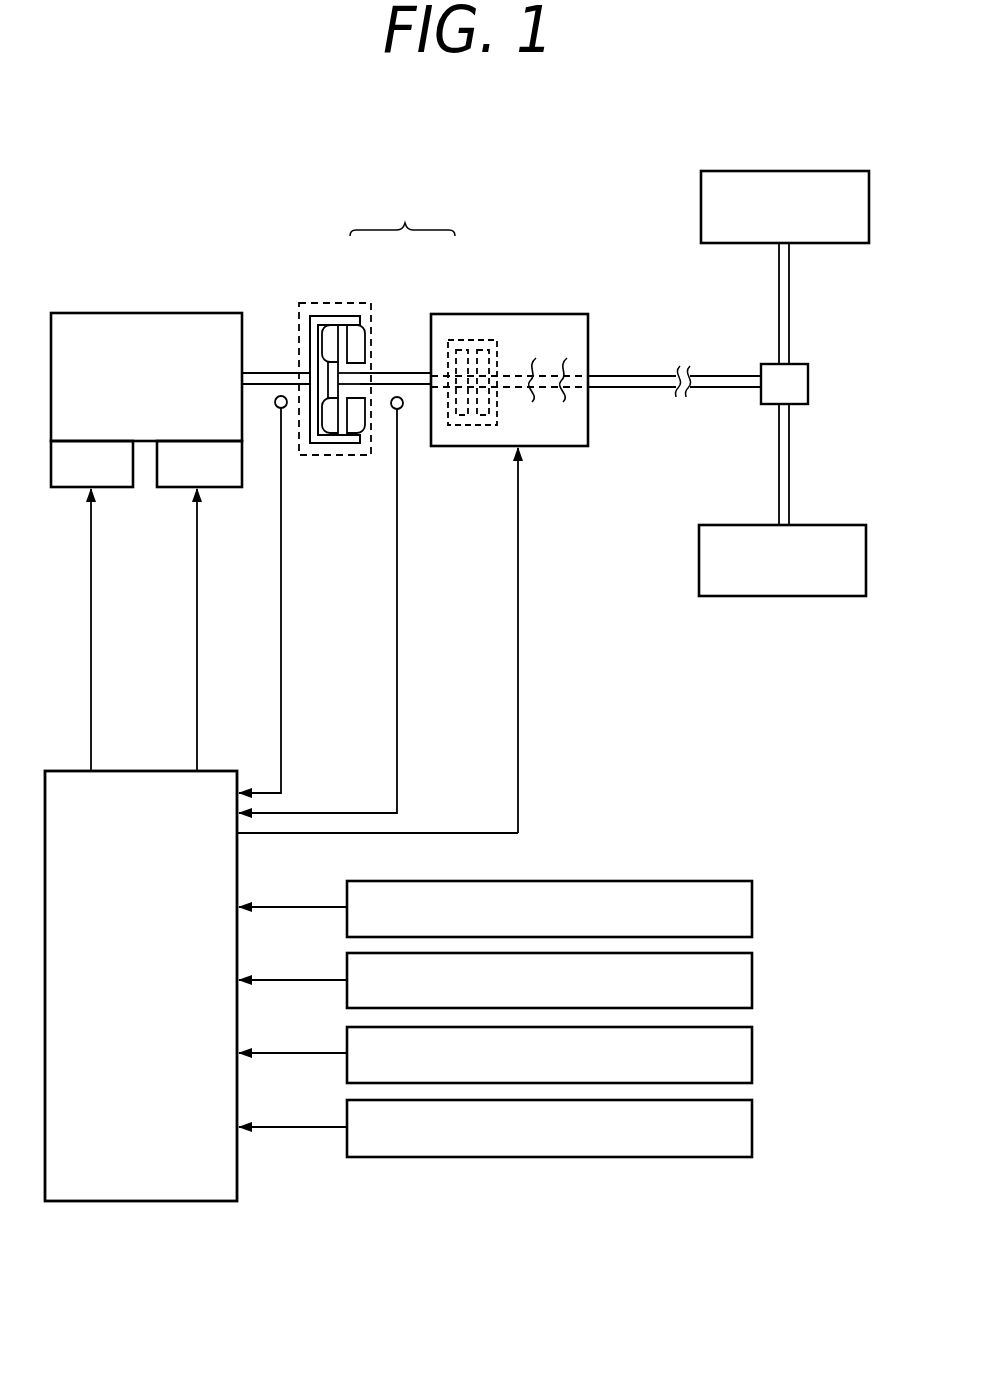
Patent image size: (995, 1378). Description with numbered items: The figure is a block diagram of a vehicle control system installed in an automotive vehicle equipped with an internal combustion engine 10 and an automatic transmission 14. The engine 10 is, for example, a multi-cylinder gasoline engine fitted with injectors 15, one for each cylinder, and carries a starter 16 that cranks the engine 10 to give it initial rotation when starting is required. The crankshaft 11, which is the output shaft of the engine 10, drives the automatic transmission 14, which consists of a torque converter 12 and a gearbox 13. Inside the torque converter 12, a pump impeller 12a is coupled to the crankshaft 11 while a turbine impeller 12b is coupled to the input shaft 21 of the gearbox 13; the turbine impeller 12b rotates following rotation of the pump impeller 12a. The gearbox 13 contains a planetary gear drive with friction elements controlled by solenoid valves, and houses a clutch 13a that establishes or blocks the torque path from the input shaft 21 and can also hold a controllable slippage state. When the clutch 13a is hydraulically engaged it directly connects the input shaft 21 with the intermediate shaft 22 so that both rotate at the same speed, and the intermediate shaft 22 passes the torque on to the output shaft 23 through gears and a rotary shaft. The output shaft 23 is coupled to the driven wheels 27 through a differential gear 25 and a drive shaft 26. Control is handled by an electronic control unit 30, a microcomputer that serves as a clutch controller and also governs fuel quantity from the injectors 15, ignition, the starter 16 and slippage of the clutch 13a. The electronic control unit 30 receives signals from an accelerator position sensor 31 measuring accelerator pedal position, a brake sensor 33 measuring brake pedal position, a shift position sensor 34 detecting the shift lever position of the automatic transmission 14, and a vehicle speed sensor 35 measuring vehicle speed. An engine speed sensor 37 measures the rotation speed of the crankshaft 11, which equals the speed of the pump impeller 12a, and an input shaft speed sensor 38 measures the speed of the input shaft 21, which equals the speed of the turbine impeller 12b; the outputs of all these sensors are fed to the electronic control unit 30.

The internal combustion engine 10 is at (222, 313).
The crankshaft 11 is at (272, 373).
The torque converter 12 is at (352, 303).
The pump impeller 12a is at (367, 424).
The turbine impeller 12b is at (323, 445).
The gearbox 13 is at (449, 314).
The clutch 13a is at (477, 425).
The automatic transmission 14 is at (402, 212).
The injectors 15 is at (117, 488).
The starter 16 is at (220, 488).
The input shaft 21 is at (397, 373).
The intermediate shaft 22 is at (512, 375).
The output shaft 23 is at (636, 376).
The differential gear 25 is at (771, 364).
The drive shaft 26 is at (793, 340).
The driven wheels 27 is at (712, 171).
The electronic control unit 30 is at (220, 771).
The accelerator position sensor 31 is at (752, 907).
The brake sensor 33 is at (752, 980).
The shift position sensor 34 is at (752, 1053).
The vehicle speed sensor 35 is at (752, 1127).
The engine speed sensor 37 is at (275, 410).
The input shaft speed sensor 38 is at (403, 410).